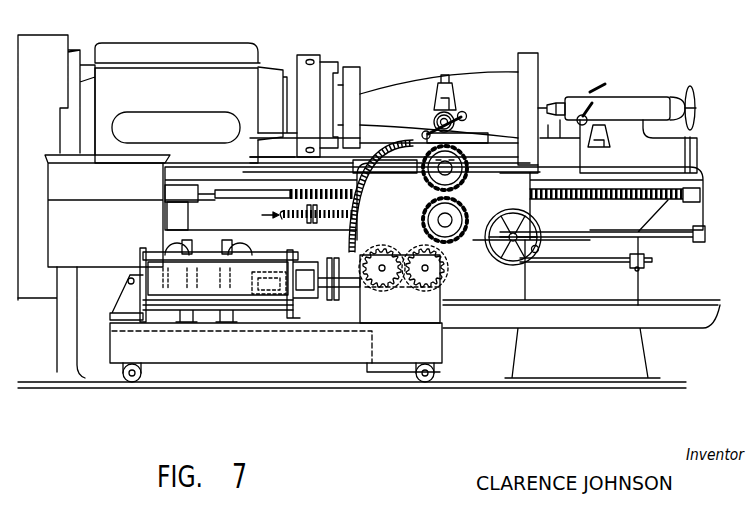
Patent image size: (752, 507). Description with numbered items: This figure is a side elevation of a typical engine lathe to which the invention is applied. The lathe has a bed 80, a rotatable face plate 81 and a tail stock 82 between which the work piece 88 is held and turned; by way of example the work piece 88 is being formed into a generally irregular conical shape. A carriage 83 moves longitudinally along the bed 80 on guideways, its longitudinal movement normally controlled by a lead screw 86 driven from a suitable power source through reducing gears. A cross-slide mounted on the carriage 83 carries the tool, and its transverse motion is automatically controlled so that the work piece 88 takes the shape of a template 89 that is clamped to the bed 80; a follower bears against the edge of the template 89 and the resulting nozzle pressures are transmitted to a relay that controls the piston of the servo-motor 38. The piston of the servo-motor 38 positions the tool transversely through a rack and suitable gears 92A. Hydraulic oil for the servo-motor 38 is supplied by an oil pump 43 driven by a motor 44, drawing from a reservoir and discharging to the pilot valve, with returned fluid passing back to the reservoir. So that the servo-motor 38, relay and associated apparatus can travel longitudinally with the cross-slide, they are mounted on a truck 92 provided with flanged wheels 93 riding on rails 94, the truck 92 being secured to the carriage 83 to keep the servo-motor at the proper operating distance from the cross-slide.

The servo-motor 38 is at (165, 312).
The oil pump 43 is at (299, 262).
The motor 44 is at (177, 248).
The bed 80 is at (643, 254).
The rotatable face plate 81 is at (312, 55).
The tail stock 82 is at (560, 96).
The carriage 83 is at (482, 205).
The lead screw 86 is at (573, 200).
The work piece 88 is at (394, 113).
The template 89 is at (380, 128).
The truck 92 is at (445, 343).
The gears 92A is at (447, 273).
The flanged wheels 93 is at (147, 383).
The rails 94 is at (296, 388).